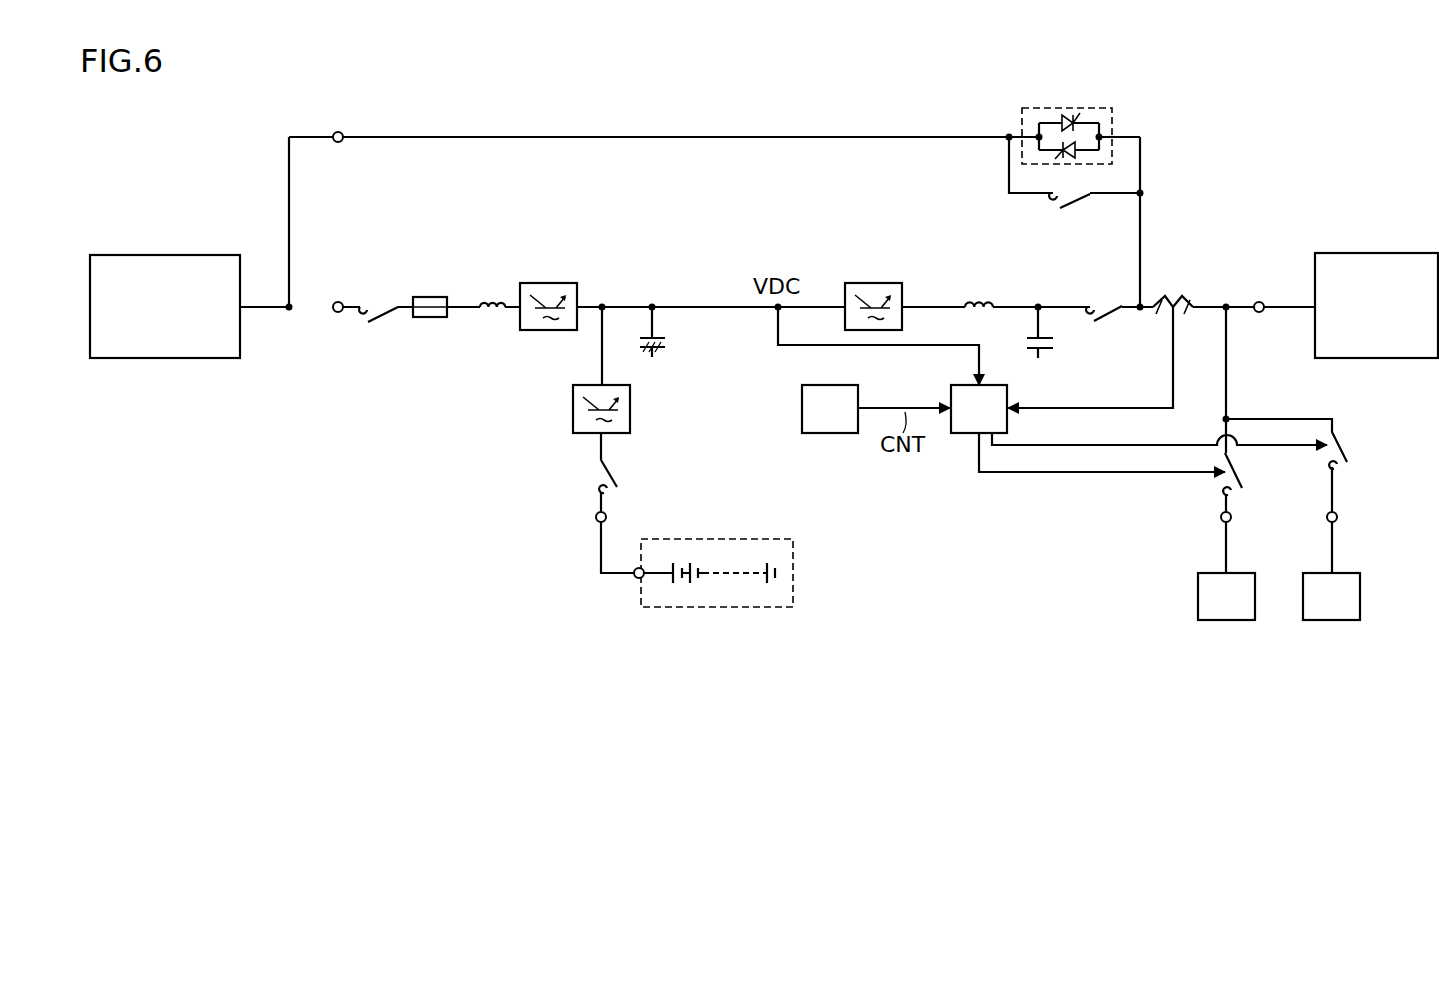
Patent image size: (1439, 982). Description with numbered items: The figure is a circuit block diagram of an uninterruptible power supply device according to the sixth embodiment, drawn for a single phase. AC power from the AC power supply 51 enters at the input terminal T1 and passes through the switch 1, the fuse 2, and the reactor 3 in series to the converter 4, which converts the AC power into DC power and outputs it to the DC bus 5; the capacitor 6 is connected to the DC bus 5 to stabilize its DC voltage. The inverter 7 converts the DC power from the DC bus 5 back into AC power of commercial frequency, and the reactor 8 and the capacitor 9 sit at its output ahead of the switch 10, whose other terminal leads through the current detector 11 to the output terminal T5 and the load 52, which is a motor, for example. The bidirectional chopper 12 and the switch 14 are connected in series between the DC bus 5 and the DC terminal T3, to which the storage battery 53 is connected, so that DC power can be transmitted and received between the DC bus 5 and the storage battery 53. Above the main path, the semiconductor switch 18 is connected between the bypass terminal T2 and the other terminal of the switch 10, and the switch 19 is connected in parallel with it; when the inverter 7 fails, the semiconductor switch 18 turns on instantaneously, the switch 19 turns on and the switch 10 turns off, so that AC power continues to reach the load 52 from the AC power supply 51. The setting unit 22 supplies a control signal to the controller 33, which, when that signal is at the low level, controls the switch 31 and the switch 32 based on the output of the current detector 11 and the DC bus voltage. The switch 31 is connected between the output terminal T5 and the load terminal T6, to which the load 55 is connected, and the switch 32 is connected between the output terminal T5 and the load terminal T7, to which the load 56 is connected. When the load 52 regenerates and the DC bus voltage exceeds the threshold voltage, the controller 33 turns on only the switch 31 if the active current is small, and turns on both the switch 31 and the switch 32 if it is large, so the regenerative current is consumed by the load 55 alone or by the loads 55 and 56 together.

The switch 1 is at (381, 300).
The fuse 2 is at (430, 296).
The reactor 3 is at (493, 297).
The converter 4 is at (550, 283).
The DC bus 5 is at (722, 300).
The capacitor 6 is at (664, 343).
The inverter 7 is at (878, 283).
The reactor 8 is at (977, 297).
The capacitor 9 is at (1043, 355).
The switch 10 is at (1112, 322).
The current detector 11 is at (1188, 296).
The bidirectional chopper 12 is at (632, 412).
The switch 14 is at (612, 470).
The semiconductor switch 18 is at (1075, 108).
The switch 19 is at (1075, 205).
The setting unit 22 is at (830, 409).
The switch 31 is at (1248, 471).
The switch 32 is at (1352, 442).
The controller 33 is at (979, 409).
The AC power supply 51 is at (178, 255).
The load 52 is at (1385, 253).
The storage battery 53 is at (717, 607).
The load 55 is at (1226, 596).
The load 56 is at (1331, 596).
The input terminal T1 is at (338, 313).
The bypass terminal T2 is at (338, 131).
The DC terminal T3 is at (595, 517).
The output terminal T5 is at (1259, 313).
The load terminal T6 is at (1232, 517).
The load terminal T7 is at (1338, 517).